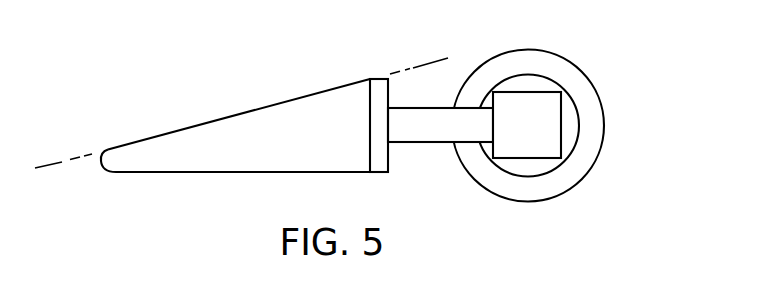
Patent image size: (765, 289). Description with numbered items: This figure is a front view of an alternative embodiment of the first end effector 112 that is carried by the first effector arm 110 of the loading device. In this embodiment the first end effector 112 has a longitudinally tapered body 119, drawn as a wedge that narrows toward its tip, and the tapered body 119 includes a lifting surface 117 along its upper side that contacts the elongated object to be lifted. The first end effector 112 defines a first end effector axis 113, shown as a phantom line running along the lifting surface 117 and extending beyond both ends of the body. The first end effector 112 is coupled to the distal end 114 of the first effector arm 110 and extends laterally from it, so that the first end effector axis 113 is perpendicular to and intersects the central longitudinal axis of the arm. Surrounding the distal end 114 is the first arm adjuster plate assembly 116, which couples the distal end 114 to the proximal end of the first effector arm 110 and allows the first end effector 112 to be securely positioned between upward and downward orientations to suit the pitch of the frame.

The first effector arm 110 is at (356, 129).
The first end effector 112 is at (244, 161).
The first end effector axis 113 is at (59, 163).
The distal end 114 is at (561, 137).
The first arm adjuster plate assembly 116 is at (527, 49).
The lifting surface 117 is at (240, 113).
The longitudinally tapered body 119 is at (227, 173).